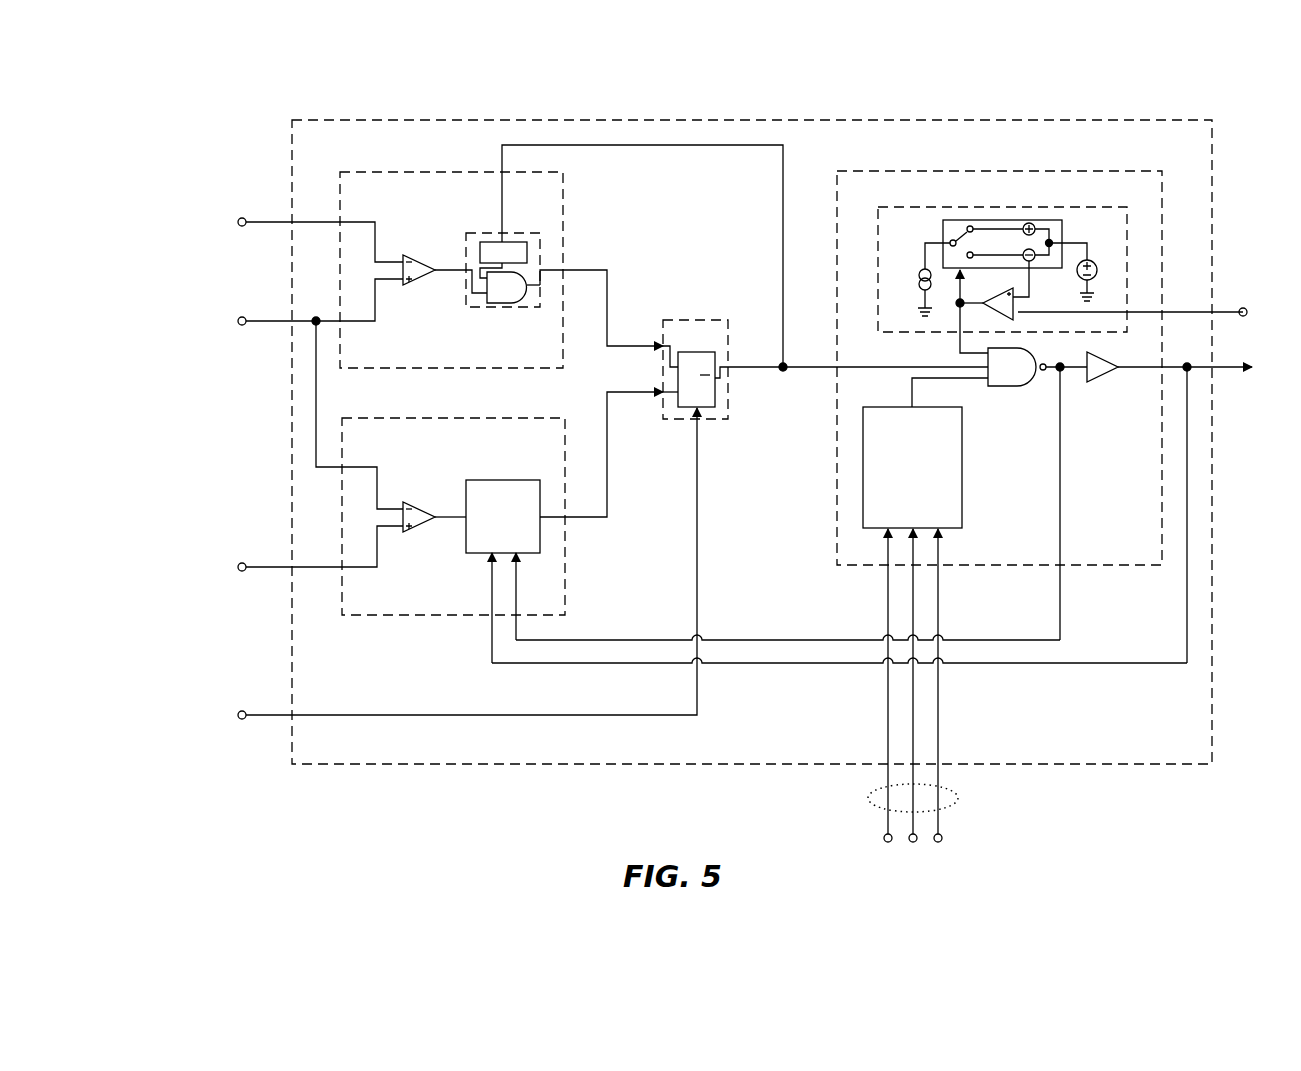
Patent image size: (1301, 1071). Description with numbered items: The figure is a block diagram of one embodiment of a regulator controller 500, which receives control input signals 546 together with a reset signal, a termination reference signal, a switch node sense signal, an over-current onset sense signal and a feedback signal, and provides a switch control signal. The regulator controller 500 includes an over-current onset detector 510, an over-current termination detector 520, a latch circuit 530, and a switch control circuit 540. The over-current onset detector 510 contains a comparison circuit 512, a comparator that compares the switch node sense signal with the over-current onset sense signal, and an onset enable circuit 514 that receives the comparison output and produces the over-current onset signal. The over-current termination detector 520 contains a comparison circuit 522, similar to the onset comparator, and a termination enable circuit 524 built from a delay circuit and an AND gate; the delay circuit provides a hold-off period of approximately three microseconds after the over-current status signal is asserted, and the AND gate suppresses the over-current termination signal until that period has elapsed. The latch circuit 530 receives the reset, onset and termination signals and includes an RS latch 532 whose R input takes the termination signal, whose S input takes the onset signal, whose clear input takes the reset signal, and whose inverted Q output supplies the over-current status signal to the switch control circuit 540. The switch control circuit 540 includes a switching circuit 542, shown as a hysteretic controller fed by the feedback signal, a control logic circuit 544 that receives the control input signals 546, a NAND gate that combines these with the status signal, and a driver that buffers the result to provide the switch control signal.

The regulator controller 500 is at (1045, 82).
The over-current onset detector 510 is at (388, 418).
The comparison circuit 512 is at (430, 512).
The onset enable circuit 514 is at (520, 479).
The over-current termination detector 520 is at (388, 172).
The comparison circuit 522 is at (430, 262).
The termination enable circuit 524 is at (538, 231).
The latch circuit 530 is at (704, 319).
The RS latch 532 is at (712, 351).
The switch control circuit 540 is at (864, 170).
The switching circuit 542 is at (909, 207).
The control logic circuit 544 is at (962, 478).
The control input signals 546 is at (998, 685).